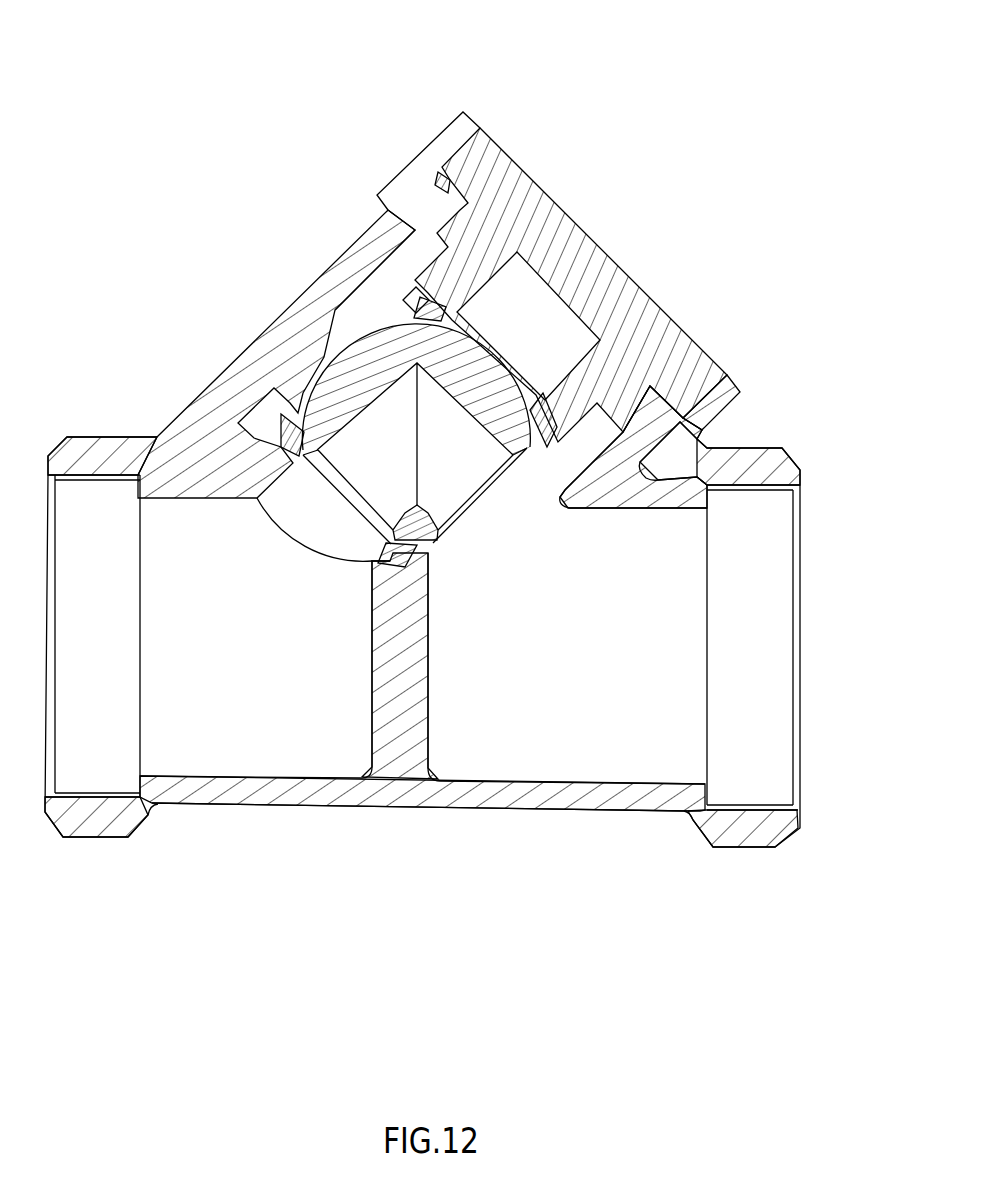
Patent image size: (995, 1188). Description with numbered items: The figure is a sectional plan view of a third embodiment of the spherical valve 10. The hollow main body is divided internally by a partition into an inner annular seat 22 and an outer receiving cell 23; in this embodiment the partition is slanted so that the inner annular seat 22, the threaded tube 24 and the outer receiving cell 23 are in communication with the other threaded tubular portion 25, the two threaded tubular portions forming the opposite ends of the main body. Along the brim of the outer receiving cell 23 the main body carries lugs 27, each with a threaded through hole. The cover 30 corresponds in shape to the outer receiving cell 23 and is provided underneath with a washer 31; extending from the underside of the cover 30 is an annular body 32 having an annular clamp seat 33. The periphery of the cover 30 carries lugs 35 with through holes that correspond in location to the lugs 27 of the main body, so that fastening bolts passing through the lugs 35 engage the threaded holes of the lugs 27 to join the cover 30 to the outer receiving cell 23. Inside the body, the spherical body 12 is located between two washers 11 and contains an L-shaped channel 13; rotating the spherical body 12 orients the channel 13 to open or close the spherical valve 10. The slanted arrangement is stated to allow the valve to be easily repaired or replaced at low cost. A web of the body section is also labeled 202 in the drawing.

The spherical valve 10 is at (422, 455).
The washers 11 is at (413, 320).
The spherical body 12 is at (363, 443).
The L-shaped channel 13 is at (312, 383).
The inner annular seat 22 is at (298, 530).
The outer receiving cell 23 is at (578, 440).
The threaded tube 24 is at (93, 782).
The threaded tubular portion 25 is at (747, 795).
The lugs 27 is at (398, 185).
The cover 30 is at (585, 243).
The washer 31 is at (443, 173).
The annular body 32 is at (437, 285).
The annular clamp seat 33 is at (408, 298).
The lugs 35 is at (453, 133).
The body bottom web 202 is at (403, 783).